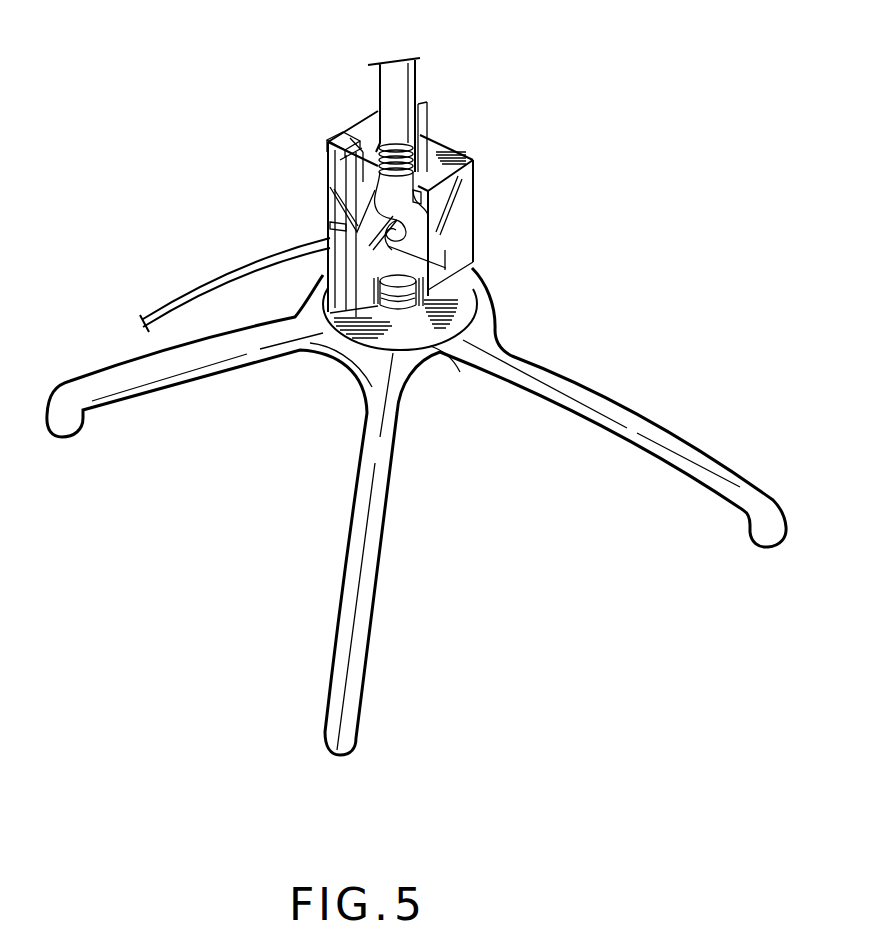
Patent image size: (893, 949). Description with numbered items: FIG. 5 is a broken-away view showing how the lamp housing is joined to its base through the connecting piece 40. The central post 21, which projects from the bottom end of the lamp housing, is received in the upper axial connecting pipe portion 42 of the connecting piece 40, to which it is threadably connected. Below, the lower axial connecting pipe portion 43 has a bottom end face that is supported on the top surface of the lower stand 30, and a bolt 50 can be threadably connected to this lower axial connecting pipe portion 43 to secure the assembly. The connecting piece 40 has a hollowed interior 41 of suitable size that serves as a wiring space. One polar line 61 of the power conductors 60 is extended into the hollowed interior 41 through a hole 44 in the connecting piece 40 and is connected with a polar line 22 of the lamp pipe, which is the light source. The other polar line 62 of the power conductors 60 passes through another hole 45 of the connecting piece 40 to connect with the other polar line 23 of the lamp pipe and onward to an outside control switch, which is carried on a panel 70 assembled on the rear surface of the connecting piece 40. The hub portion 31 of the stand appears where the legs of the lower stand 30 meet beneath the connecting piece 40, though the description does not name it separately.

The central post 21 is at (400, 92).
The polar line of the lamp pipe 22 is at (412, 197).
The other polar line of the lamp pipe 23 is at (345, 140).
The lower stand 30 is at (373, 513).
The hub 31 is at (423, 333).
The connecting piece 40 is at (343, 201).
The hollowed interior 41 is at (440, 280).
The upper axial connecting pipe portion 42 is at (430, 148).
The lower axial connecting pipe portion 43 is at (447, 307).
The hole 44 is at (328, 272).
The another hole 45 is at (352, 146).
The bolt 50 is at (382, 320).
The power conductors 60 is at (187, 302).
The polar line of the power conductors 61 is at (412, 237).
The other polar line of the power conductors 62 is at (352, 205).
The panel 70 is at (330, 226).